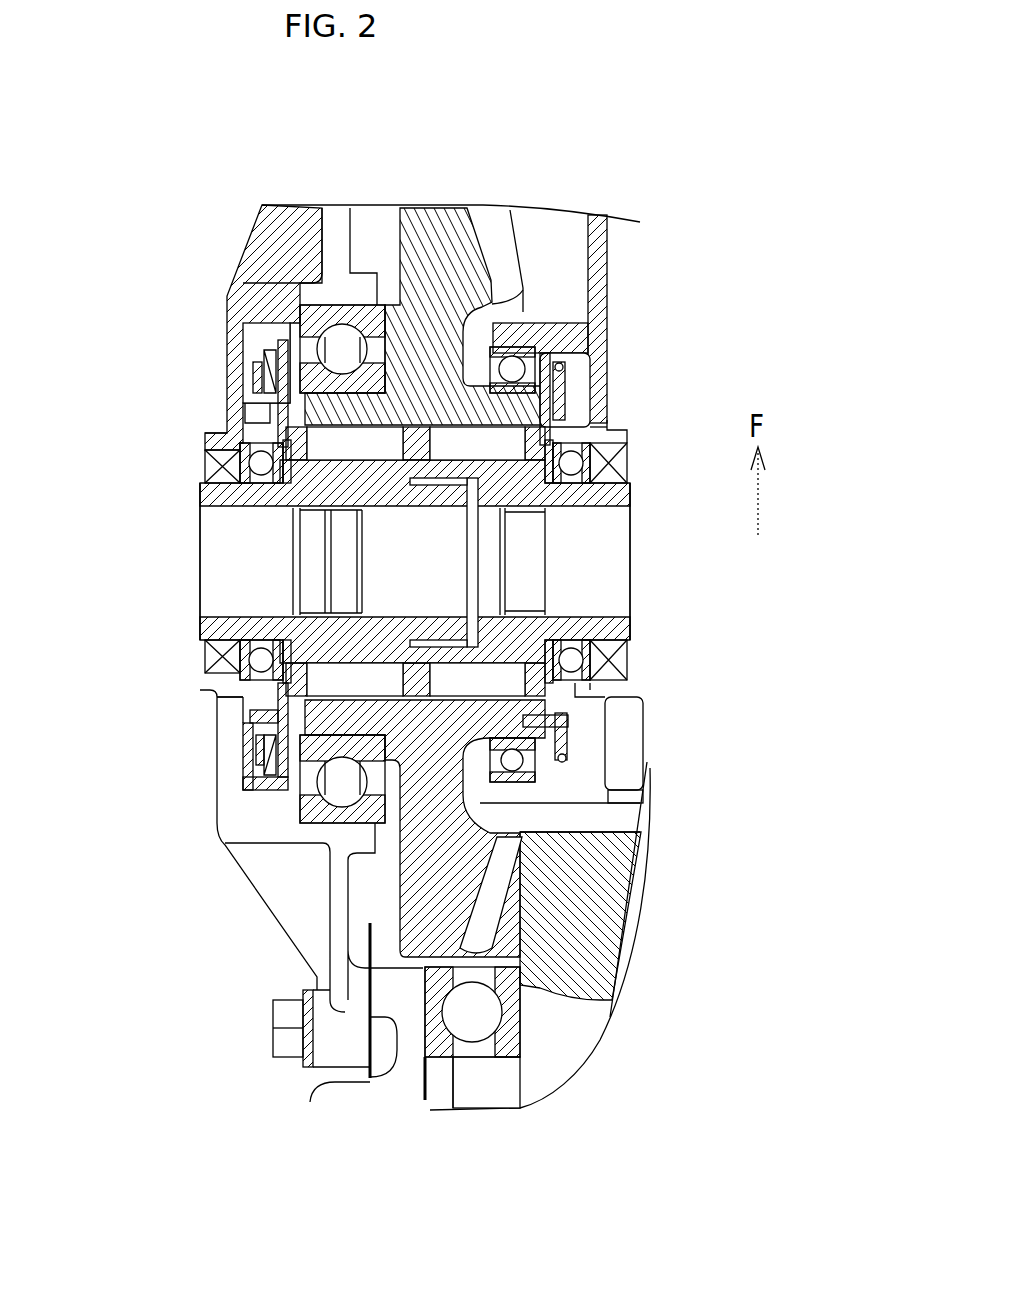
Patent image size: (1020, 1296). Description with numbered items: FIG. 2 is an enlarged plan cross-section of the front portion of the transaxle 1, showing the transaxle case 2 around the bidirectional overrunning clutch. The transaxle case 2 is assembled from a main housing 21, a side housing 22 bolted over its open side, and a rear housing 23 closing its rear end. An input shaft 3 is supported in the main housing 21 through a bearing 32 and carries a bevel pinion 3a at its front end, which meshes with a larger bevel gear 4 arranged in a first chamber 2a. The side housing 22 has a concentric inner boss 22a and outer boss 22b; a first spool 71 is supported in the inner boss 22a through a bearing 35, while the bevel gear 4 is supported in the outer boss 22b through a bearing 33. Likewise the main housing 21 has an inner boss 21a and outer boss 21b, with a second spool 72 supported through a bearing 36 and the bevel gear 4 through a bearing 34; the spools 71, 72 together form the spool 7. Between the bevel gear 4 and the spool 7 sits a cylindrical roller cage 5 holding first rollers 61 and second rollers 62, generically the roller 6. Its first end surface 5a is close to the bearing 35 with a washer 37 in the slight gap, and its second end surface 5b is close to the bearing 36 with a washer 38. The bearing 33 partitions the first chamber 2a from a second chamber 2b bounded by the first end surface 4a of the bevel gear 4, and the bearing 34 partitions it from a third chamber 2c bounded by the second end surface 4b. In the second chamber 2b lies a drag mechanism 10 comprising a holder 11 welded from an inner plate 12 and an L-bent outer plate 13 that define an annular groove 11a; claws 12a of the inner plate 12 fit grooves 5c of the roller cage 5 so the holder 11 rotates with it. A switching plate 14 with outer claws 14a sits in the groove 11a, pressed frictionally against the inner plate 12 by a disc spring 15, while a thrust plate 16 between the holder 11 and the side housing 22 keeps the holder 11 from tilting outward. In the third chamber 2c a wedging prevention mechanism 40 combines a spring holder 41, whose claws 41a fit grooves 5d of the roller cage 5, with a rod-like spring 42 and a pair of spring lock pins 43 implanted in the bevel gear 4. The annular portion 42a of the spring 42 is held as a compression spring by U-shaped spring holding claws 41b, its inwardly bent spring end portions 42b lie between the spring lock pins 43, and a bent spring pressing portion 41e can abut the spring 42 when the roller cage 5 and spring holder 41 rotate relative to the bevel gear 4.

The transaxle 1 is at (178, 212).
The transaxle case 2 is at (452, 677).
The first chamber 2a is at (572, 266).
The second chamber 2b is at (235, 852).
The third chamber 2c is at (618, 845).
The input shaft 3 is at (553, 1075).
The bevel pinion 3a is at (308, 985).
The bevel gear 4 is at (442, 228).
The first end surface 4a is at (315, 322).
The second end surface 4b is at (595, 952).
The roller cage 5 is at (502, 362).
The first end surface 5a is at (222, 452).
The second end surface 5b is at (610, 490).
The grooves 5c is at (250, 450).
The grooves 5d is at (578, 450).
The roller 6 is at (415, 563).
The first rollers 61 is at (355, 563).
The second rollers 62 is at (477, 563).
The spool 7 is at (413, 561).
The first spool 71 is at (200, 490).
The second spool 72 is at (632, 490).
The drag mechanism 10 is at (275, 337).
The holder 11 is at (260, 798).
The annular groove 11a is at (243, 795).
The inner plate 12 is at (255, 283).
The claws 12a is at (250, 405).
The outer plate 13 is at (228, 344).
The switching plate 14 is at (240, 298).
The claws 14a is at (255, 830).
The disc spring 15 is at (250, 337).
The thrust plate 16 is at (262, 350).
The main housing 21 is at (610, 250).
The inner boss 21a is at (632, 695).
The outer boss 21b is at (630, 897).
The side housing 22 is at (345, 218).
The inner boss 22a is at (217, 712).
The outer boss 22b is at (346, 845).
The rear housing 23 is at (437, 1095).
The bearing 32 is at (555, 1030).
The bearing 33 is at (340, 822).
The bearing 34 is at (510, 342).
The bearing 35 is at (218, 433).
The bearing 36 is at (600, 700).
The washer 37 is at (282, 487).
The washer 38 is at (549, 470).
The wedging prevention mechanism 40 is at (625, 792).
The spring holder 41 is at (570, 394).
The claws 41a is at (600, 426).
The spring holding claws 41b is at (595, 344).
The spring pressing portion 41e is at (583, 752).
The spring 42 is at (565, 790).
The annular portion 42a is at (568, 398).
The spring end portions 42b is at (570, 728).
The spring lock pins 43 is at (624, 741).